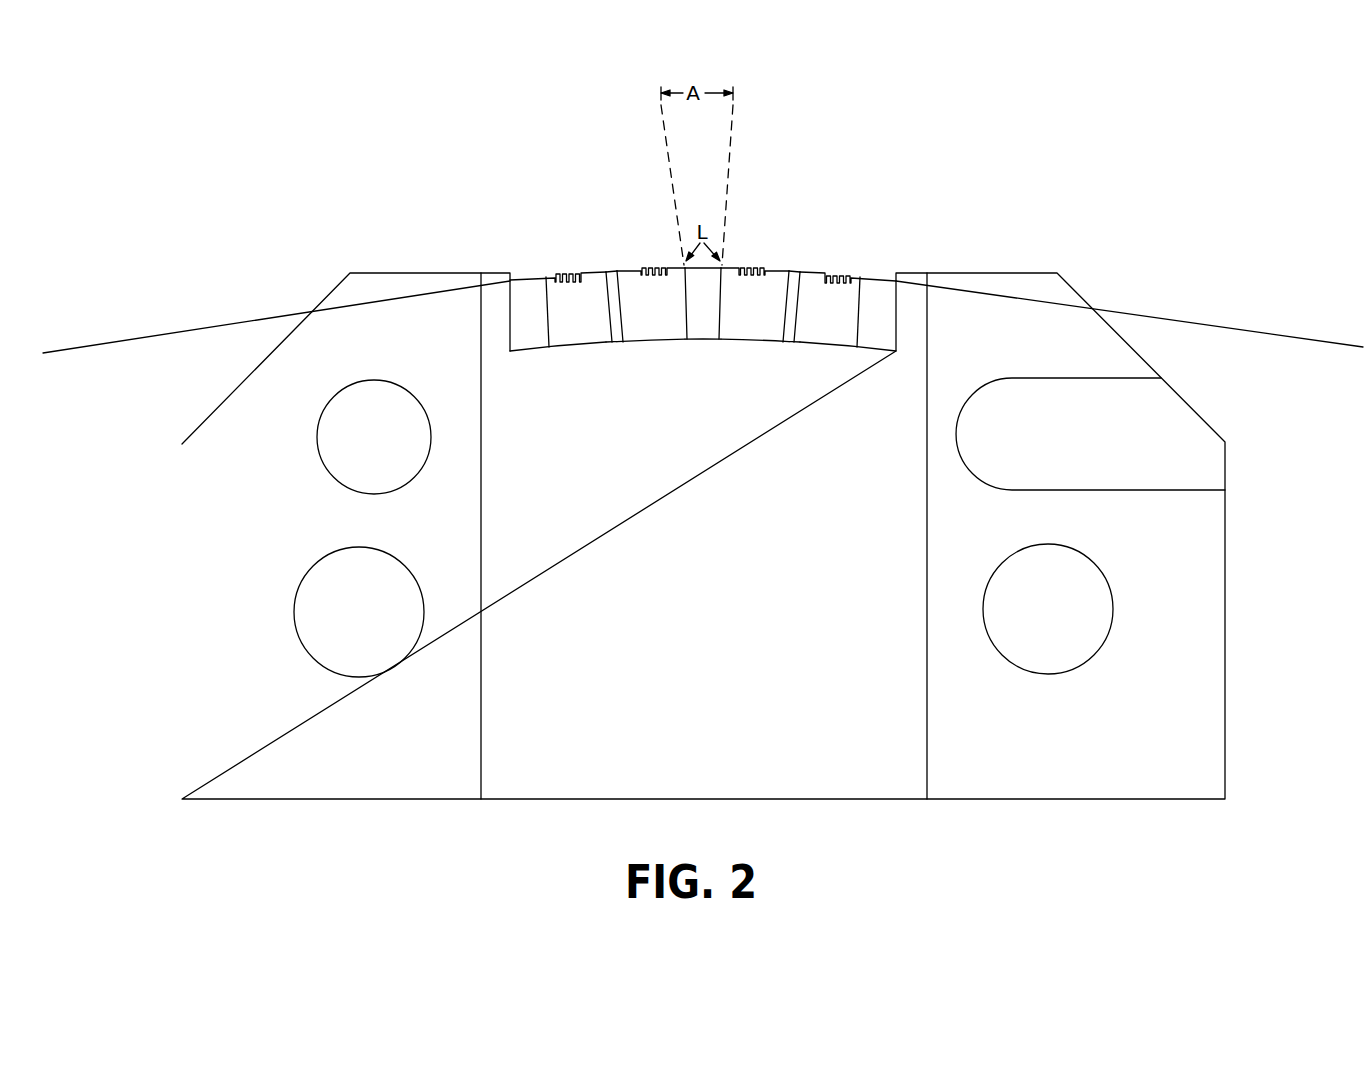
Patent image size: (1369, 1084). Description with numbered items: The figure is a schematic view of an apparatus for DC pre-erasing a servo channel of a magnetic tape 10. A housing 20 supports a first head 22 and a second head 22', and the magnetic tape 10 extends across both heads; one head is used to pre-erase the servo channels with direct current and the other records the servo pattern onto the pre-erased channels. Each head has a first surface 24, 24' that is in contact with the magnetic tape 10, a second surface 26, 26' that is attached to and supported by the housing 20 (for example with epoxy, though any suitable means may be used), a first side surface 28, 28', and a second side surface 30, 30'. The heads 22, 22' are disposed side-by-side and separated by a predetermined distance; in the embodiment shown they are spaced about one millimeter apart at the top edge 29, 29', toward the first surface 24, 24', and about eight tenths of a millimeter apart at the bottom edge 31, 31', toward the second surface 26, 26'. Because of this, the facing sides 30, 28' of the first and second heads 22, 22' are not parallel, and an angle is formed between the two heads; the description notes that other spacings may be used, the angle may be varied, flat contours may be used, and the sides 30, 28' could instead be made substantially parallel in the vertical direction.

The magnetic tape 10 is at (1017, 231).
The housing 20 is at (1193, 720).
The first head 22 is at (573, 278).
The second head 22' is at (832, 276).
The first surface 24 is at (574, 253).
The first surface 24' is at (830, 251).
The second surface 26 is at (558, 360).
The second surface 26' is at (829, 361).
The first side surface 28 is at (529, 339).
The first side surface 28' is at (705, 340).
The top edge 29 is at (644, 233).
The top edge 29' is at (756, 233).
The second side surface 30 is at (671, 349).
The second side surface 30' is at (873, 341).
The bottom edge 31 is at (755, 381).
The bottom edge 31' is at (669, 361).